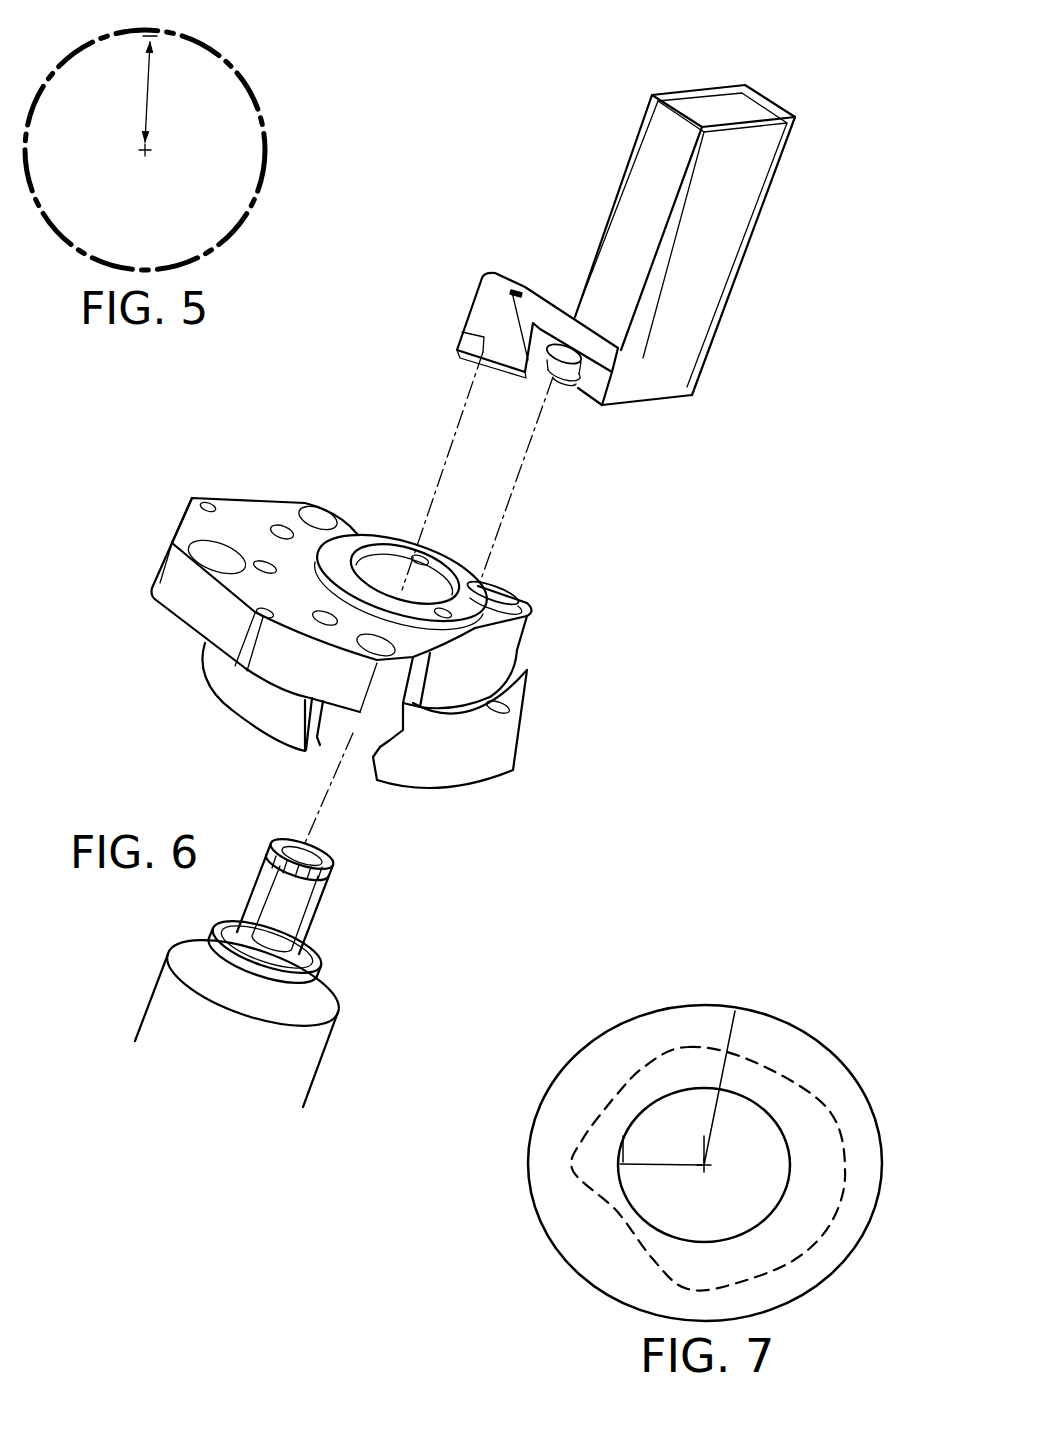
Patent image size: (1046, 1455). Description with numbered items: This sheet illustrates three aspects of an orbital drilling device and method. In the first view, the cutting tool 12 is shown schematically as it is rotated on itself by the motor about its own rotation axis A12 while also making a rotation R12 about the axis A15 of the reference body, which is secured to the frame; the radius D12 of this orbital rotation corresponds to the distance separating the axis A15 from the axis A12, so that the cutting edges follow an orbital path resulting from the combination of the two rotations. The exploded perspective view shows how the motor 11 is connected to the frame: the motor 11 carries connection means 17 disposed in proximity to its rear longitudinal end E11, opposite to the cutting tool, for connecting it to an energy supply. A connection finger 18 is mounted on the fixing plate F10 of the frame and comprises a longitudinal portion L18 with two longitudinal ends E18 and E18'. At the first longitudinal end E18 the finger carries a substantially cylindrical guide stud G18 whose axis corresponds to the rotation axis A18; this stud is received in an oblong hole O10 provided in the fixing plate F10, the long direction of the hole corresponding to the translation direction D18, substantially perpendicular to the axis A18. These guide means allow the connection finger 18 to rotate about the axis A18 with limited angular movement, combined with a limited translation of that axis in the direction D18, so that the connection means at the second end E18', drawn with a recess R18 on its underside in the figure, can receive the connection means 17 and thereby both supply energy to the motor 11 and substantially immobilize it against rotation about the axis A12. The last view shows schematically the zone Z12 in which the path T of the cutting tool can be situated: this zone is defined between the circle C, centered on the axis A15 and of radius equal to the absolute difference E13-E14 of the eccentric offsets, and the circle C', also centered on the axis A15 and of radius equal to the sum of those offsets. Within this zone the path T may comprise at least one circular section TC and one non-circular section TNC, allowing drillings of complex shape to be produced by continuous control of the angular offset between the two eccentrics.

In FIG. 5, the cutting tool 12 is at (168, 30).
In FIG. 5, the rotation axis of the cutting tool A12 is at (126, 56).
In FIG. 5, the radius of rotation R12 D12 is at (175, 92).
In FIG. 5, the axis of the reference body A15 is at (148, 164).
In FIG. 7, the axis of the reference body A15 is at (706, 1180).
In FIG. 5, the rotation of the cutting tool about axis A15 R12 is at (264, 83).
In FIG. 6, the connection finger 18 is at (500, 258).
In FIG. 6, the rotation axis of the connection finger A18 is at (589, 275).
In FIG. 6, the second longitudinal end of the longitudinal portion E18' is at (471, 301).
In FIG. 6, the longitudinal portion of the connection finger L18 is at (550, 312).
In FIG. 6, the first longitudinal end of the longitudinal portion E18 is at (628, 300).
In FIG. 6, the translation direction D18 is at (425, 328).
In FIG. 6, the holder recess R18 is at (493, 373).
In FIG. 6, the guide stud G18 is at (577, 372).
In FIG. 6, the oblong hole O10 is at (513, 595).
In FIG. 6, the fixing plate F10 is at (491, 764).
In FIG. 6, the connection means 17 is at (354, 919).
In FIG. 6, the rear longitudinal end of the motor E11 is at (354, 987).
In FIG. 6, the motor 11 is at (308, 1073).
In FIG. 7, the circle of radius E13+E14 C' is at (705, 1120).
In FIG. 7, the zone Z12 is at (800, 1059).
In FIG. 7, the path T is at (845, 1111).
In FIG. 7, the circle of radius |E13-E14| C is at (726, 1165).
In FIG. 7, the non-circular section TNC is at (559, 1171).
In FIG. 7, the circular section TC is at (797, 1268).
In FIG. 7, the radius of circle C E13-E14 is at (665, 1150).